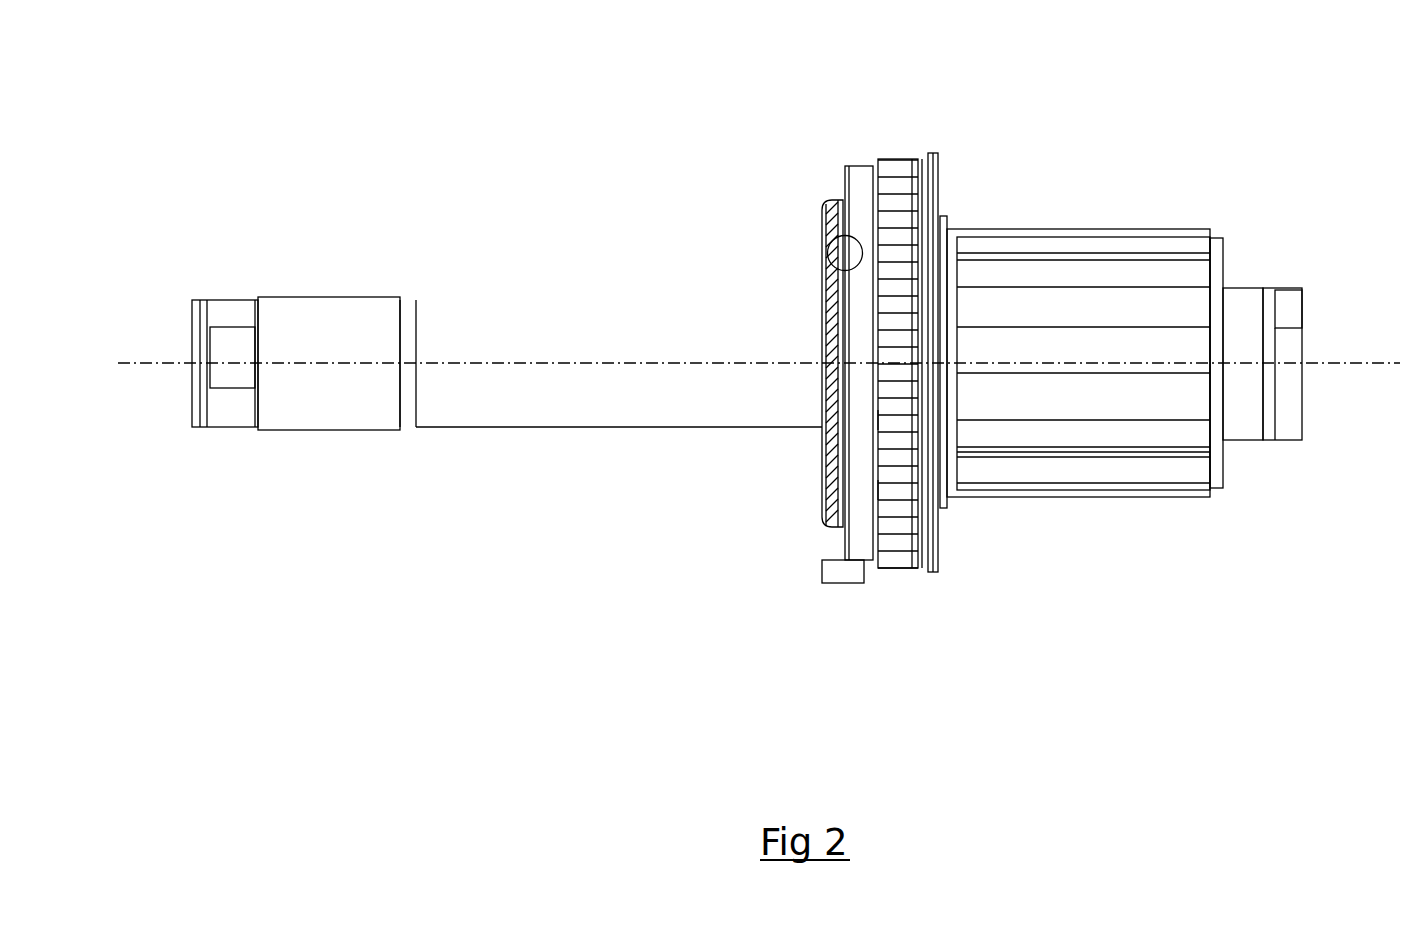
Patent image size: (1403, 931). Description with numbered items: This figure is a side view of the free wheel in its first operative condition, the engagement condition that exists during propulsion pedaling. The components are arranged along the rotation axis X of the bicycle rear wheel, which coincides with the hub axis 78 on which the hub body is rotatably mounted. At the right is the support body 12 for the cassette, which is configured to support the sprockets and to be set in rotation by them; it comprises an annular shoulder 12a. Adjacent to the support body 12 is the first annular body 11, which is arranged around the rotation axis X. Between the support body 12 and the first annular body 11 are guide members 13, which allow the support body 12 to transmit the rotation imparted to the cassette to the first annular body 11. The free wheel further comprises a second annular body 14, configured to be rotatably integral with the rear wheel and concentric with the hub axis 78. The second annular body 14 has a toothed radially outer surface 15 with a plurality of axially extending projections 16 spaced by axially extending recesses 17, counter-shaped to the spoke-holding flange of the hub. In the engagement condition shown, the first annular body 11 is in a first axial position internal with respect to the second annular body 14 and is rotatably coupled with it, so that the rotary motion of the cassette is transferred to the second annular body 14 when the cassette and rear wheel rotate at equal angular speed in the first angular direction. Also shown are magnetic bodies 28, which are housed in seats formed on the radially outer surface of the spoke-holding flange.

The rotation axis X is at (130, 362).
The hub axis 78 is at (462, 400).
The guide members 13 is at (829, 476).
The first annular body 11 is at (855, 150).
The magnetic body 28 is at (845, 248).
The toothed radially outer surface 15 is at (900, 190).
The second annular body 14 is at (896, 586).
The projections 16 is at (900, 417).
The recesses 17 is at (902, 488).
The annular shoulder 12a is at (938, 173).
The support body 12 is at (1119, 256).